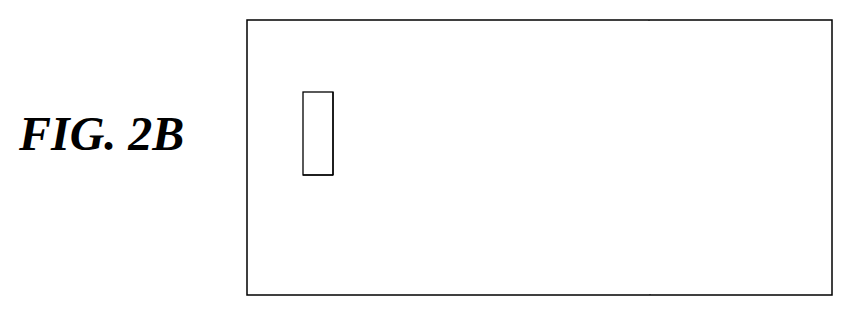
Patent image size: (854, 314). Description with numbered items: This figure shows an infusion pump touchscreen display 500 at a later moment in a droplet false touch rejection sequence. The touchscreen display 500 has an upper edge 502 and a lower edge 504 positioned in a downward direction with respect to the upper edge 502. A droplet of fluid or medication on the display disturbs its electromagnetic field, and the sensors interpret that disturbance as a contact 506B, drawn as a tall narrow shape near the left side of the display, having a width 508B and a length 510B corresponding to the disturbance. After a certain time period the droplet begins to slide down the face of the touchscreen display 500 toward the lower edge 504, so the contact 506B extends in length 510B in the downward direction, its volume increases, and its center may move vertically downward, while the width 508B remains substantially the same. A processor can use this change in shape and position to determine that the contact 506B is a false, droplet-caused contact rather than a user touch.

The touchscreen display 500 is at (539, 157).
The upper edge 502 is at (649, 20).
The lower edge 504 is at (650, 295).
The contact 506B is at (357, 93).
The width 508B is at (318, 175).
The length 510B is at (334, 135).